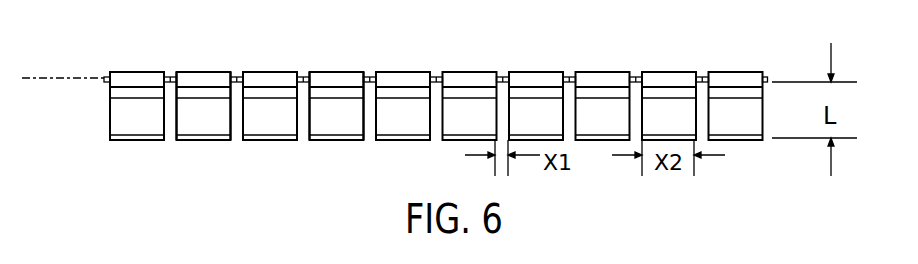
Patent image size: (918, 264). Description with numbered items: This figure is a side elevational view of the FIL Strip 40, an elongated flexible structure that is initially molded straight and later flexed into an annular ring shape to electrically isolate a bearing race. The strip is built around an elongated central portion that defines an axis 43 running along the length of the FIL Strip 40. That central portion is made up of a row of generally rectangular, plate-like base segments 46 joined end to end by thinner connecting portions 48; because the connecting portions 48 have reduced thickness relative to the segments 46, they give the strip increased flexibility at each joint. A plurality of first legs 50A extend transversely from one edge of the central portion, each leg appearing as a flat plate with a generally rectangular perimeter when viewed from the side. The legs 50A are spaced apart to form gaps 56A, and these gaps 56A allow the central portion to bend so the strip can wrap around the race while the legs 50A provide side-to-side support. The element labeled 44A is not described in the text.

The FIL Strip 40 is at (426, 102).
The axis 43 is at (88, 78).
The bottom wall 44A is at (133, 130).
The base segments 46 is at (137, 72).
The connecting portions 48 is at (167, 77).
The first legs 50A is at (120, 118).
The gaps 56A is at (165, 132).